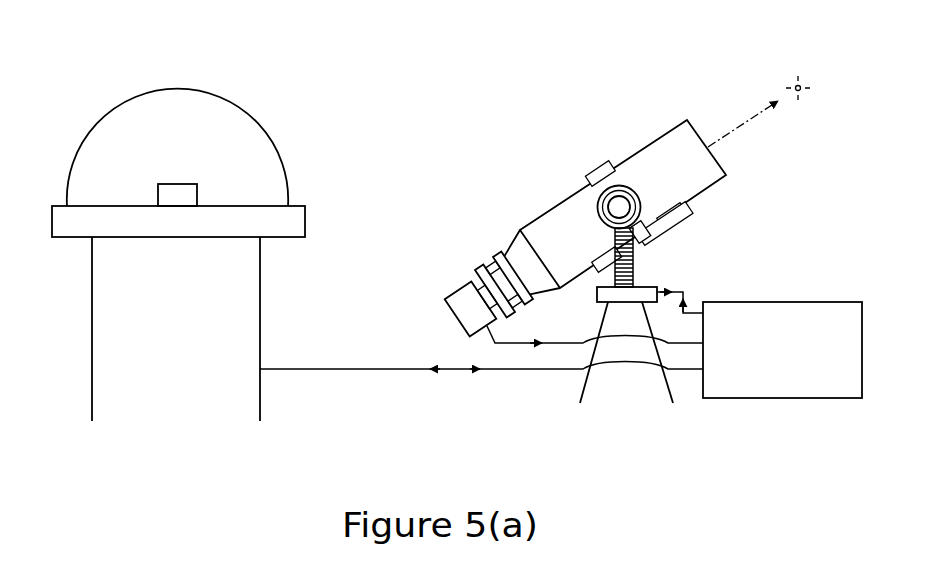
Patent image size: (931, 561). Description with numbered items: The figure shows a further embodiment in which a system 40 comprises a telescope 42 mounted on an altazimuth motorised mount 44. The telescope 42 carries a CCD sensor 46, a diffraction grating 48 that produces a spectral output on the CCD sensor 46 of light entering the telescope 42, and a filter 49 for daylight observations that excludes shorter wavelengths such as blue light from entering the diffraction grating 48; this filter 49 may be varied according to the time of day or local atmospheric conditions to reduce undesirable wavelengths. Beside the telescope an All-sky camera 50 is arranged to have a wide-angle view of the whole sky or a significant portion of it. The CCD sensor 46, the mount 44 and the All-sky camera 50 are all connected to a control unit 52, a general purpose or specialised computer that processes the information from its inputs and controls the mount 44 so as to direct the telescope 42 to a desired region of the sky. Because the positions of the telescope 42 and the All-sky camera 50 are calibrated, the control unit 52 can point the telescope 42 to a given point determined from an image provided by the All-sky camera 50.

The system 40 is at (430, 86).
The telescope 42 is at (635, 152).
The altazimuth motorised mount 44 is at (648, 287).
The CCD sensor 46 is at (448, 292).
The diffraction grating 48 is at (480, 265).
The filter 49 is at (497, 253).
The All-sky camera 50 is at (272, 150).
The control unit 52 is at (807, 302).